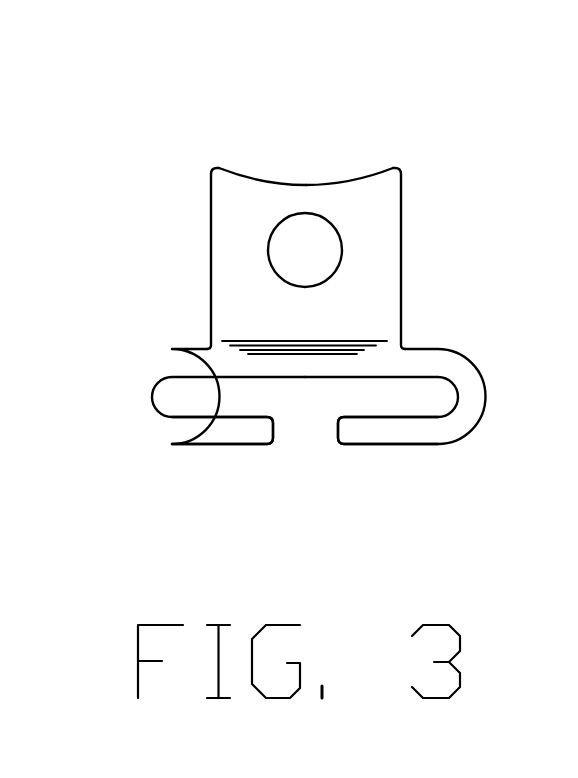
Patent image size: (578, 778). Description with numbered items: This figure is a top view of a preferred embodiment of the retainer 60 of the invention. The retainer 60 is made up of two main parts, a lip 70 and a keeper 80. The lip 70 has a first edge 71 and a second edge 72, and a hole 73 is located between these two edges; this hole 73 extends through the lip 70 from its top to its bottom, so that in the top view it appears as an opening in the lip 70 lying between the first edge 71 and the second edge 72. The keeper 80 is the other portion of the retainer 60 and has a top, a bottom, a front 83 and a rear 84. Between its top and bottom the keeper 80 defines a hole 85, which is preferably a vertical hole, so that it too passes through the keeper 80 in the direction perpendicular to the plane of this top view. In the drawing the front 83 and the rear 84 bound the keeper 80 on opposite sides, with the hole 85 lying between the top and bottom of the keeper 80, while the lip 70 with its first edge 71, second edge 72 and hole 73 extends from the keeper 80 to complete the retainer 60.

The retainer 60 is at (437, 198).
The lip 70 is at (357, 182).
The first edge 71 is at (272, 183).
The second edge 72 is at (293, 338).
The hole 73 is at (312, 214).
The keeper 80 is at (138, 500).
The front 83 is at (443, 497).
The rear 84 is at (280, 527).
The hole 85 is at (348, 518).